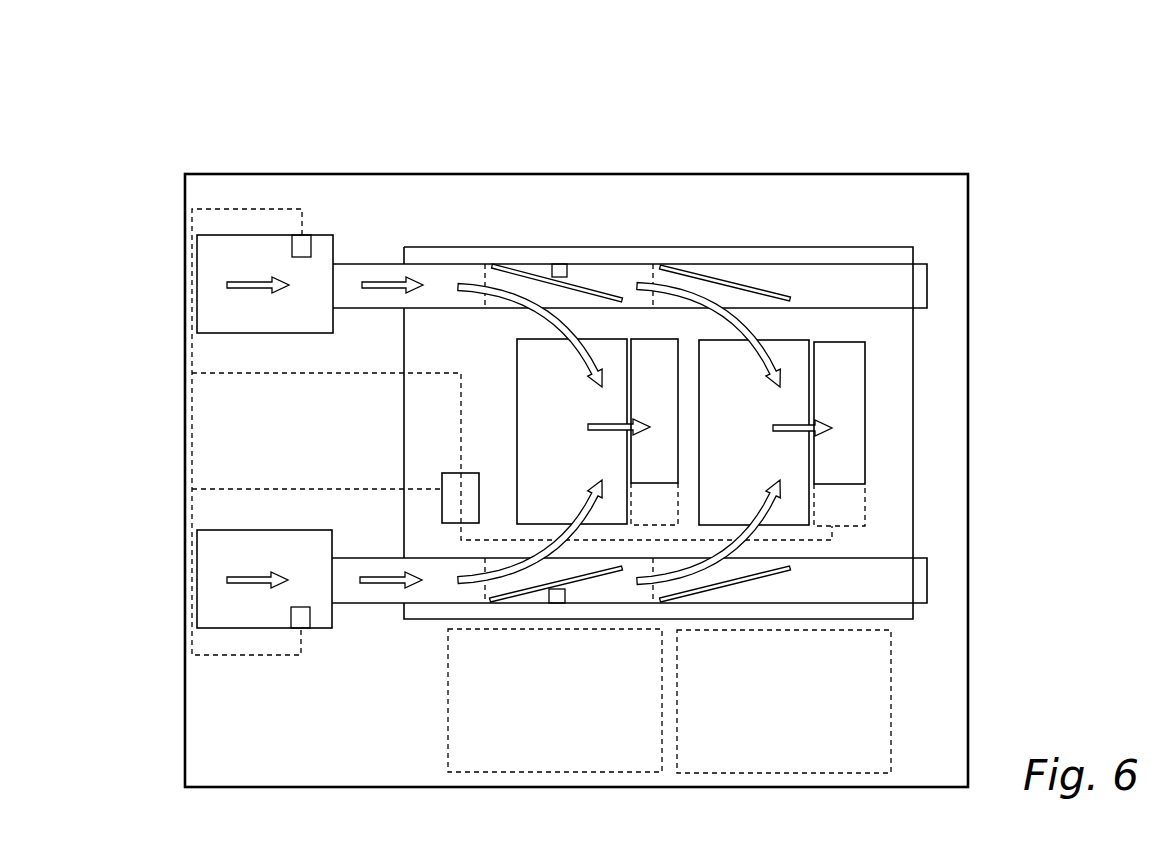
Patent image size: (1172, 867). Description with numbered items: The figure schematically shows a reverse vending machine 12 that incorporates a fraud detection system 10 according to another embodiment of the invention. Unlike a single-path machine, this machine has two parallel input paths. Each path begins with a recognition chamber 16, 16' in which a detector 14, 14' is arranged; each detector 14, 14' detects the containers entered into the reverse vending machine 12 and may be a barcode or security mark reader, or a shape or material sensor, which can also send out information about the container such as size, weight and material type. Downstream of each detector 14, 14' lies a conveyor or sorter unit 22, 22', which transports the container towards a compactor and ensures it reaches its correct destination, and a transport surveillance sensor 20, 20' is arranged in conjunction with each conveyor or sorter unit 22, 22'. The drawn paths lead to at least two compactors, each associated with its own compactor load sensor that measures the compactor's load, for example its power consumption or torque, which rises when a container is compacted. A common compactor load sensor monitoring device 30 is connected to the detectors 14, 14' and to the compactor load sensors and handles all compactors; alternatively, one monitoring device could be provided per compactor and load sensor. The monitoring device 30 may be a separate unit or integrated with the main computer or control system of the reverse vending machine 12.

The fraud detection system 10 is at (755, 93).
The reverse vending machine 12 is at (626, 448).
The detector 14 is at (320, 222).
The detector 14' is at (325, 643).
The recognition chamber 16 is at (298, 273).
The recognition chamber 16' is at (301, 591).
The transport surveillance sensor 20 is at (592, 206).
The transport surveillance sensor 20' is at (593, 665).
The conveyor or sorter unit 22 is at (557, 213).
The conveyor or sorter unit 22' is at (556, 656).
The compactor load sensor monitoring device 30 is at (450, 482).